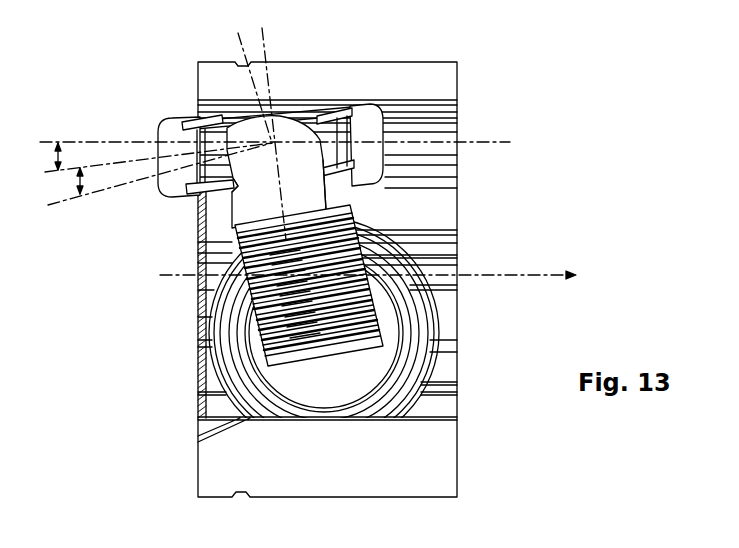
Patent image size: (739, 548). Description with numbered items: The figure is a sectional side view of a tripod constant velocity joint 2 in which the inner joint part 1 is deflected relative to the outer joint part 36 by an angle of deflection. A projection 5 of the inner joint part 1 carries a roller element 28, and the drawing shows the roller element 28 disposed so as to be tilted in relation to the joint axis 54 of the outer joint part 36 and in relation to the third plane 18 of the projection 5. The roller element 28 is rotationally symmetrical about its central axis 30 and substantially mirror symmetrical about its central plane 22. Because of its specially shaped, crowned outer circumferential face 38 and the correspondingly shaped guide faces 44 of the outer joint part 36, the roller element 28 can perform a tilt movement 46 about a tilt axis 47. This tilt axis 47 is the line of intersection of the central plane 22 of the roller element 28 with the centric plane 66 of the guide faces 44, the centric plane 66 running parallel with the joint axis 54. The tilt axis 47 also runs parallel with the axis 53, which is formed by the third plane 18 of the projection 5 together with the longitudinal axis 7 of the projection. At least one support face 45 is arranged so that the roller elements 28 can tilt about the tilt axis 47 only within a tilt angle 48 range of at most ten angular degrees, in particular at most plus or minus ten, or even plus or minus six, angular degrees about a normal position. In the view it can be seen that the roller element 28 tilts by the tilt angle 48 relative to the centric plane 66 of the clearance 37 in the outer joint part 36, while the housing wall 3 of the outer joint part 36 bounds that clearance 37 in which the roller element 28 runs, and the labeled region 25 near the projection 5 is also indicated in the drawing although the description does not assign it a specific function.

The inner joint part 1 is at (358, 346).
The tripod constant velocity joint 2 is at (560, 195).
The housing wall 3 is at (240, 229).
The projection 5 is at (310, 157).
The longitudinal axis of the projection 7 is at (242, 40).
The third plane of the projection 18 is at (156, 183).
The central plane of the roller element 22 is at (153, 163).
The neck 25 is at (248, 228).
The roller element 28 is at (364, 118).
The central axis of the roller element 30 is at (272, 140).
The outer joint part 36 is at (430, 82).
The clearance 37 is at (207, 423).
The outer circumferential face 38 is at (450, 155).
The guide faces 44 is at (430, 130).
The support face 45 is at (460, 97).
The tilt movement 46 is at (83, 172).
The tilt axis 47 is at (277, 128).
The tilt angle 48 is at (41, 173).
The axis 53 is at (230, 198).
The joint axis 54 is at (574, 274).
The centric plane 66 is at (67, 140).